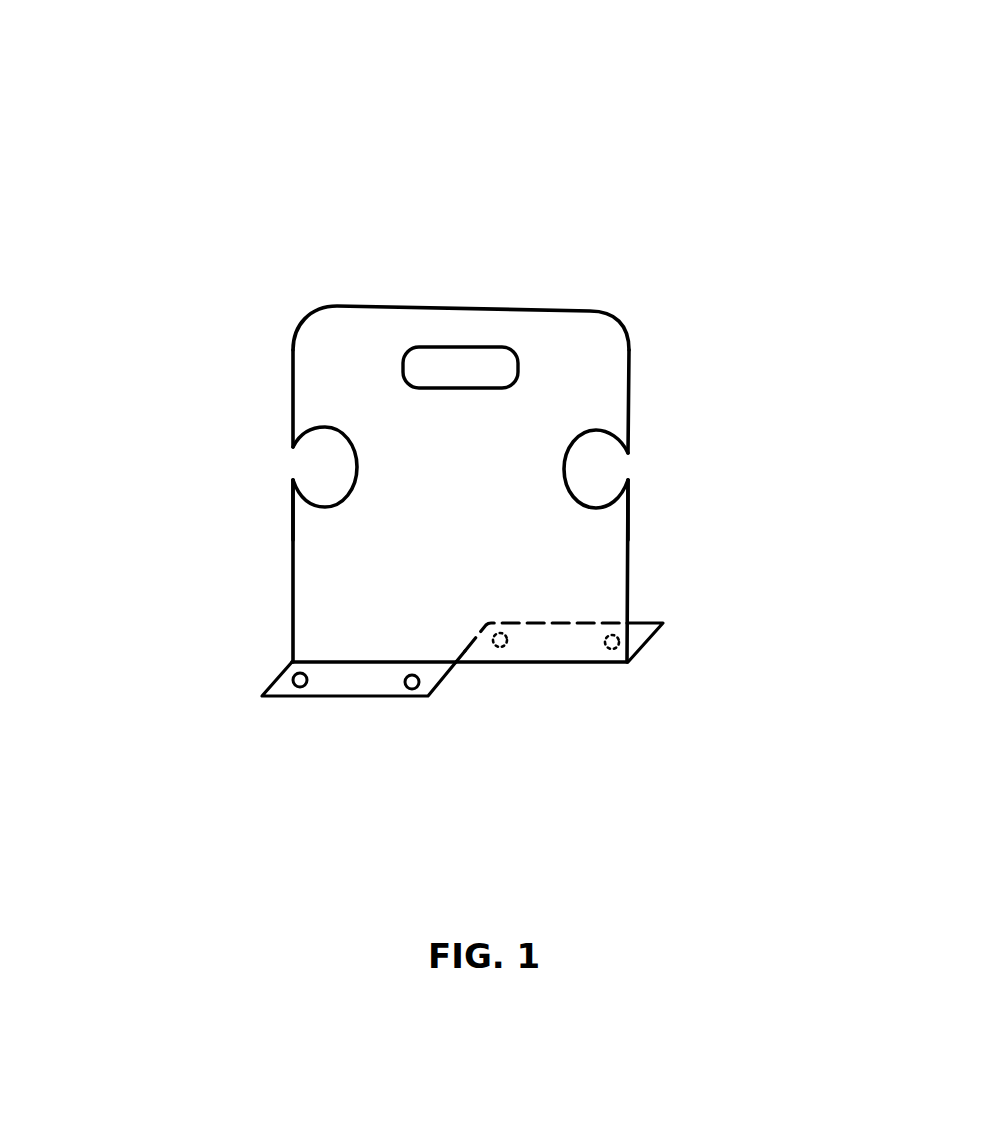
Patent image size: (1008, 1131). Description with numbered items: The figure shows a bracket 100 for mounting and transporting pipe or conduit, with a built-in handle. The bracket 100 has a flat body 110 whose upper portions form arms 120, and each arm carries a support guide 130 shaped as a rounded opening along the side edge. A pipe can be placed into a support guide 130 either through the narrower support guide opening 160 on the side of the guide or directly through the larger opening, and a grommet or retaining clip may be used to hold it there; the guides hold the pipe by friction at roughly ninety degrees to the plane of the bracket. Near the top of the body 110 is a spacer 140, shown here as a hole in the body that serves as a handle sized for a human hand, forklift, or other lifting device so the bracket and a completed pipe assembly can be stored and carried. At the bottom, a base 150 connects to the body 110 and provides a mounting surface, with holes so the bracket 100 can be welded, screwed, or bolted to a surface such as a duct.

The bracket 100 is at (510, 176).
The body 110 is at (422, 562).
The arms 120 is at (345, 378).
The support guides 130 is at (327, 503).
The spacer 140 is at (460, 347).
The base 150 is at (343, 673).
The support guide opening 160 is at (293, 475).